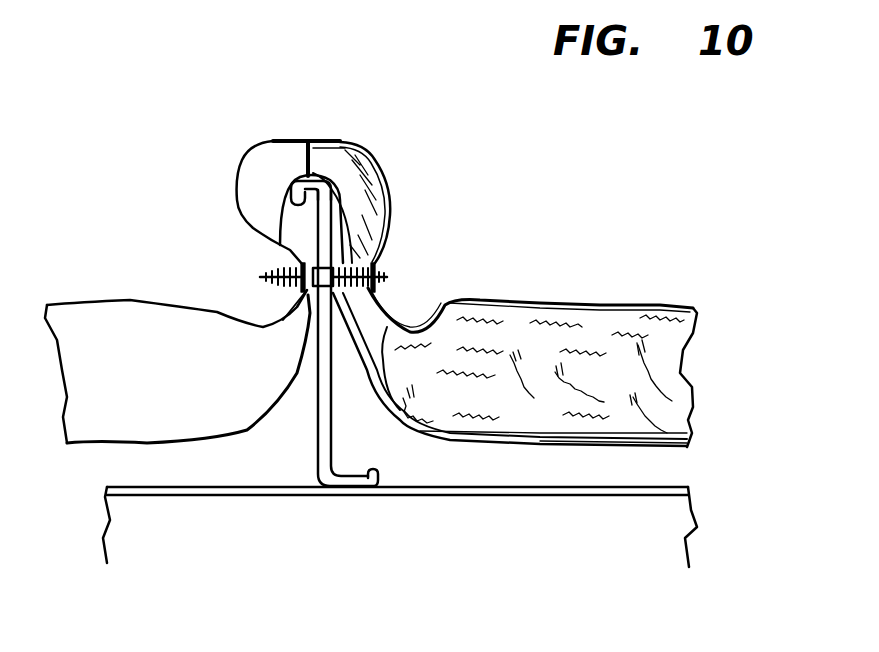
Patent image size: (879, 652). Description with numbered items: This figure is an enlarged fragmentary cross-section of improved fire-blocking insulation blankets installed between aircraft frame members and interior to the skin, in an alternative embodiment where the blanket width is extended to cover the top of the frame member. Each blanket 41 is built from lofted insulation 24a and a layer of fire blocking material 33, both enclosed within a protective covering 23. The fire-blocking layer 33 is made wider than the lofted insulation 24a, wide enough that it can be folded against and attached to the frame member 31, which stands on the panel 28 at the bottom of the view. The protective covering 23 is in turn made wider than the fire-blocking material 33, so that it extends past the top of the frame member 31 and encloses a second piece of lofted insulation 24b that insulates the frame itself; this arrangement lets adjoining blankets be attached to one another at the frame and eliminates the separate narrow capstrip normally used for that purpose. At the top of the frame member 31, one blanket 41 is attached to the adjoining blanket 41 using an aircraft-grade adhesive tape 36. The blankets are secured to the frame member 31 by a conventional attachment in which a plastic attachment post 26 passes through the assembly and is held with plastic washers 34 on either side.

The protective covering 23 is at (600, 303).
The lofted insulation 24a is at (660, 367).
The second piece of lofted insulation 24b is at (384, 186).
The plastic attachment post 26 is at (384, 272).
The panel 28 is at (540, 497).
The frame member 31 is at (318, 440).
The fire blocking material 33 is at (688, 441).
The plastic washer 34 is at (253, 290).
The aircraft-grade adhesive tape 36 is at (298, 138).
The blanket 41 is at (157, 313).